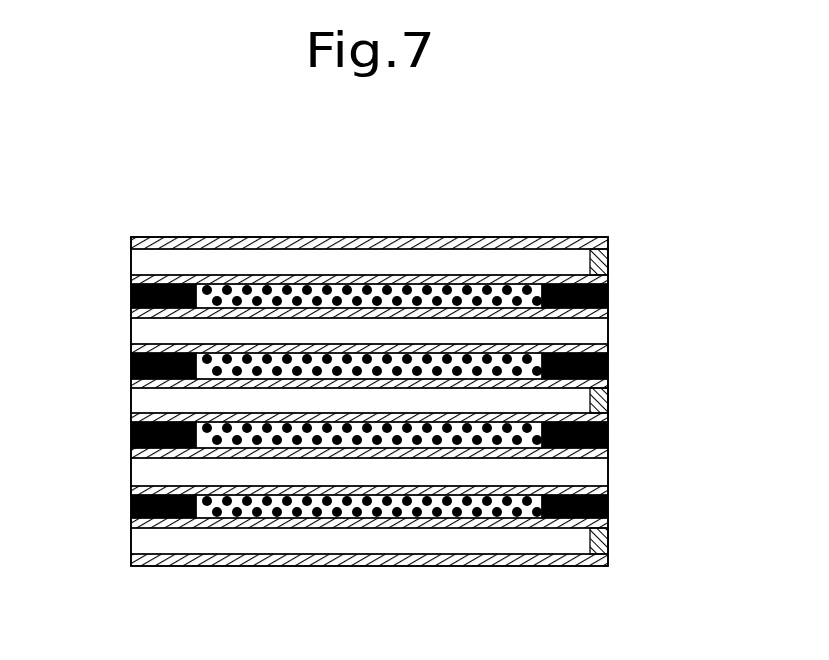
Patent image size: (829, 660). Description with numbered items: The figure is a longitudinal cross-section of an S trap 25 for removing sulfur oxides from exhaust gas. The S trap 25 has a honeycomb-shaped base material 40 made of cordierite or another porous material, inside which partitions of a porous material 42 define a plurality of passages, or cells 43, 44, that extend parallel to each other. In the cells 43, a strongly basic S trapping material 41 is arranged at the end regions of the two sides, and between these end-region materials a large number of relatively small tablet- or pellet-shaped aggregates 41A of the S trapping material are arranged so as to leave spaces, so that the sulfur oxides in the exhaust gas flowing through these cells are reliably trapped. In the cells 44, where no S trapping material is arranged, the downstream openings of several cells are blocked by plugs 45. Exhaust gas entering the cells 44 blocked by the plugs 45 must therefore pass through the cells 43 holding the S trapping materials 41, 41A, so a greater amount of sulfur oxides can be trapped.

The S trap 25 is at (531, 210).
The honeycomb-shaped base material 40 is at (578, 242).
The S trapping material 41 is at (130, 295).
The aggregates of S trapping material 41A is at (330, 358).
The porous material partitions 42 is at (487, 308).
The cells 43 is at (232, 357).
The cells 44 is at (405, 332).
The plugs 45 is at (610, 262).